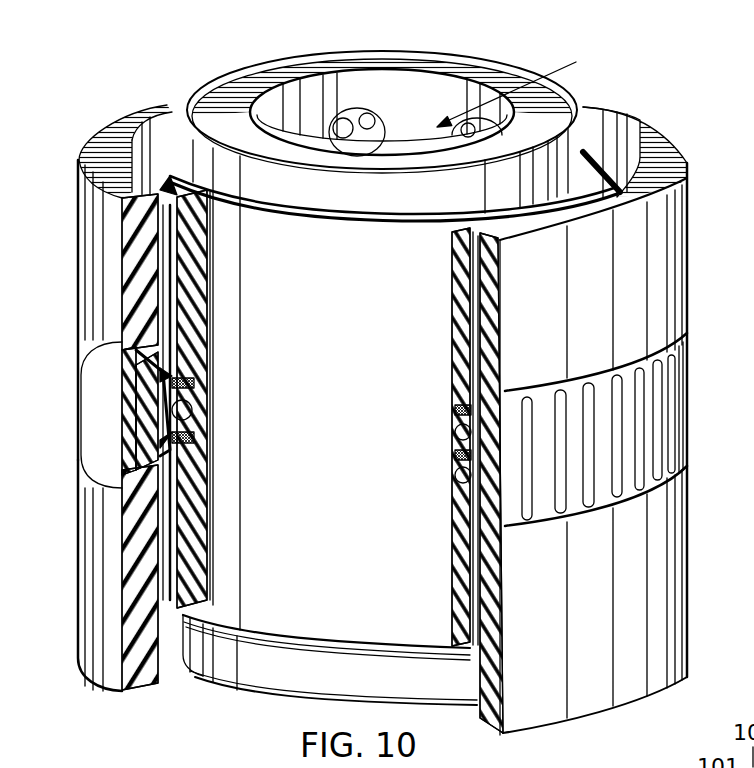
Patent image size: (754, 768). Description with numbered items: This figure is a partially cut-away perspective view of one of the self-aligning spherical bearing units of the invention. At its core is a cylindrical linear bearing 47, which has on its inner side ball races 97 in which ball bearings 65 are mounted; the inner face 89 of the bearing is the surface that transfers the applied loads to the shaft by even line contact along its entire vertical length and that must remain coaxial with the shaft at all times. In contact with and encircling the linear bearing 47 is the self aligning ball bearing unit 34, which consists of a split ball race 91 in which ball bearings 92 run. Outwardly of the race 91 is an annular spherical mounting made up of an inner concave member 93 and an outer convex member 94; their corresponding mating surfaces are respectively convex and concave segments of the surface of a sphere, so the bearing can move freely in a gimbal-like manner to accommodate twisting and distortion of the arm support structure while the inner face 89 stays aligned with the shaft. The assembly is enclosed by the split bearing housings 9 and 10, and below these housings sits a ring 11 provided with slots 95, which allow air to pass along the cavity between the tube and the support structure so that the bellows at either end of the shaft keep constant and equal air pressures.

The split bearing housing 9 is at (127, 257).
The split bearing housing 10 is at (130, 576).
The ring 11 is at (684, 386).
The self aligning ball bearing unit 34 is at (197, 402).
The cylindrical linear bearing 47 is at (480, 74).
The ball bearings 65 is at (342, 124).
The inner face 89 is at (521, 84).
The split ball race 91 is at (207, 420).
The ball bearings 92 is at (207, 428).
The inner concave member 93 is at (137, 392).
The outer convex member 94 is at (137, 417).
The slots 95 is at (657, 450).
The ball races 97 is at (382, 118).